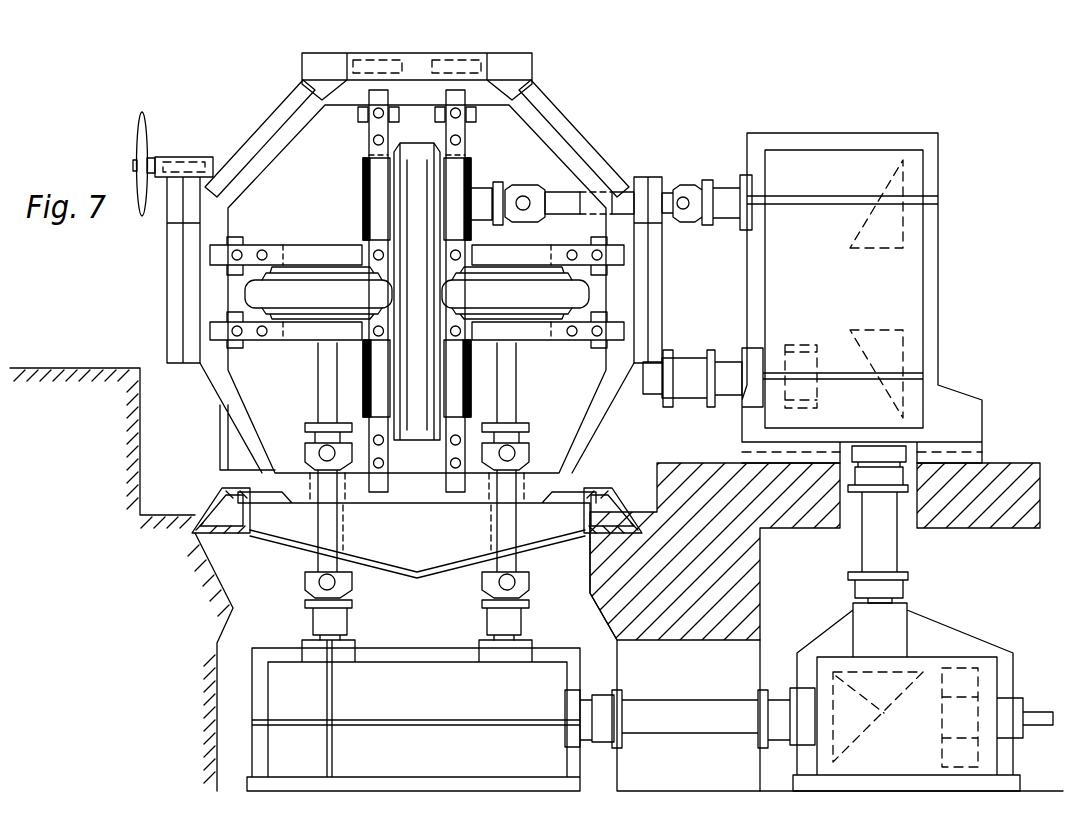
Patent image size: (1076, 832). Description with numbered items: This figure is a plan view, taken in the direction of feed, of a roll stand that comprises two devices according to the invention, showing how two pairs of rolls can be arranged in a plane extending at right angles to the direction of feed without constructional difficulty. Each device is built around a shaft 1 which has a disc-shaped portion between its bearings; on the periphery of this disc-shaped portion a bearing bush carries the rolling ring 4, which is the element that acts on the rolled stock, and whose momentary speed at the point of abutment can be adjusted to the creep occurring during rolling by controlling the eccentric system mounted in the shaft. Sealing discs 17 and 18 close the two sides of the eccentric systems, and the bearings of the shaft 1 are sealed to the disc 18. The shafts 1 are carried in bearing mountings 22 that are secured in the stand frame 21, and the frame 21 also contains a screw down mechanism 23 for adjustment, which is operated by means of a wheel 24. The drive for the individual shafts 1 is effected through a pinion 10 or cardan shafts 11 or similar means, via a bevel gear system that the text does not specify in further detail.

The shaft 1 is at (478, 200).
The rolling ring 4 is at (412, 347).
The pinion 10 is at (478, 368).
The cardan shafts 11 is at (566, 197).
The sealing disc 17 is at (399, 432).
The sealing disc 18 is at (437, 432).
The stand frame 21 is at (282, 150).
The bearing mountings 22 is at (370, 147).
The screw down mechanism 23 is at (178, 274).
The wheel 24 is at (145, 134).